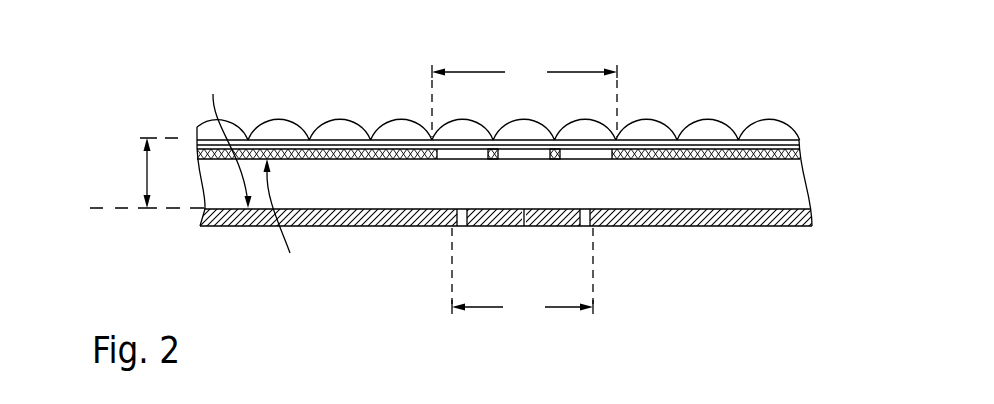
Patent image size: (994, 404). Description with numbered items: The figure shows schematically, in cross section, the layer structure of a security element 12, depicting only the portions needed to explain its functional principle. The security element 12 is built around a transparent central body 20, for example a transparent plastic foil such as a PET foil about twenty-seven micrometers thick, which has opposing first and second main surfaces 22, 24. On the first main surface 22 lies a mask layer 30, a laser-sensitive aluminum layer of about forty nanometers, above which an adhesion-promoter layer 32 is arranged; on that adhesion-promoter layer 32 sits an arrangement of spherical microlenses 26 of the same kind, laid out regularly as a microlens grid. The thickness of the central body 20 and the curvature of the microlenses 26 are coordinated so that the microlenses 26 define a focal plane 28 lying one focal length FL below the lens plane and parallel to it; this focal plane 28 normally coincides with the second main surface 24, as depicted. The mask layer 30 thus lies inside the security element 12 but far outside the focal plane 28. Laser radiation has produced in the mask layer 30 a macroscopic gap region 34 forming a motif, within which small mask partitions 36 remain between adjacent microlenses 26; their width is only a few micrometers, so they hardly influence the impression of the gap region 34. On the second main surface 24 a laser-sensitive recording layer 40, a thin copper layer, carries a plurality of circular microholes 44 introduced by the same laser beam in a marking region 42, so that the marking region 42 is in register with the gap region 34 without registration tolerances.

The security element 12 is at (150, 67).
The transparent central body 20 is at (797, 188).
The first main surface 22 is at (283, 218).
The second main surface 24 is at (227, 139).
The microlenses 26 is at (647, 130).
The focal plane 28 is at (98, 196).
The mask layer 30 is at (800, 158).
The adhesion-promoter layer 32 is at (800, 146).
The gap region 34 is at (524, 98).
The mask partitions 36 is at (493, 160).
The laser-sensitive recording layer 40 is at (797, 222).
The marking region 42 is at (522, 275).
The microholes 44 is at (523, 222).
The focal length FL is at (145, 172).